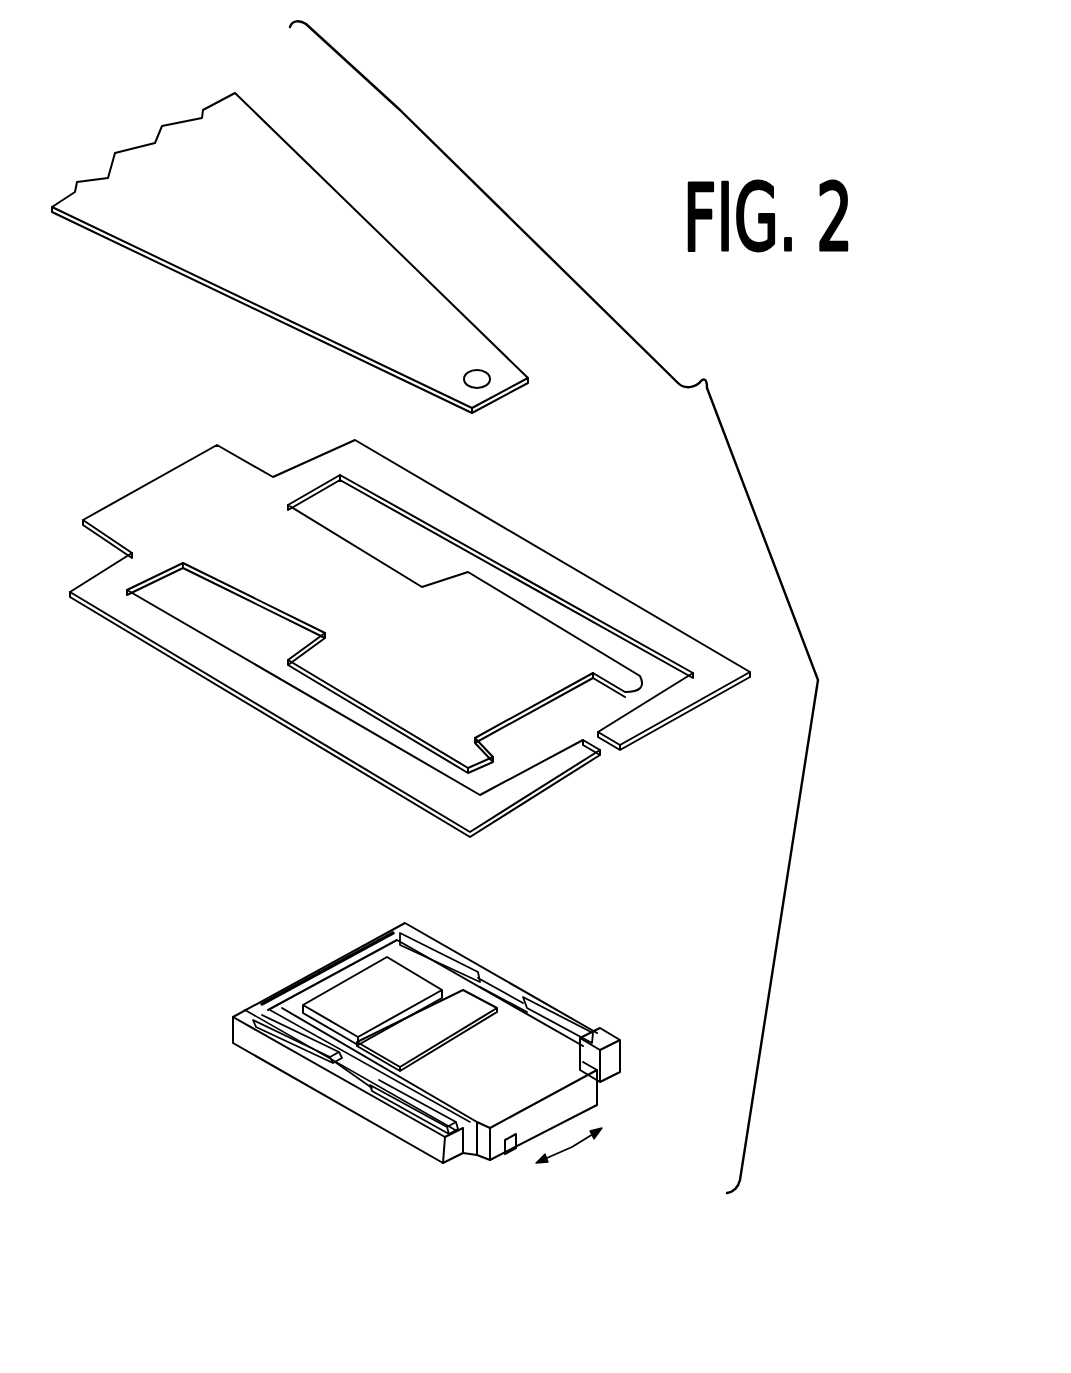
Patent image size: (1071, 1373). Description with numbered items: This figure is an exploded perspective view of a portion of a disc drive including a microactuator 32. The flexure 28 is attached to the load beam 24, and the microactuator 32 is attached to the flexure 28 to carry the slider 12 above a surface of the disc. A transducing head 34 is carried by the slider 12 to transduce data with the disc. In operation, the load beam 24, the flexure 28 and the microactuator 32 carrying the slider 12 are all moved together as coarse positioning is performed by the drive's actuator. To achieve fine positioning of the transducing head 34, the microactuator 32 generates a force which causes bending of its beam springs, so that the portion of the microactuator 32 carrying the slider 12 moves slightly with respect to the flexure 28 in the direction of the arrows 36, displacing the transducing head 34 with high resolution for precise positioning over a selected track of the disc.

The load beam 24 is at (297, 173).
The flexure 28 is at (511, 534).
The microactuator 32 is at (516, 981).
The slider 12 is at (580, 1118).
The transducing head 34 is at (509, 1152).
The arrows 36 is at (572, 1147).